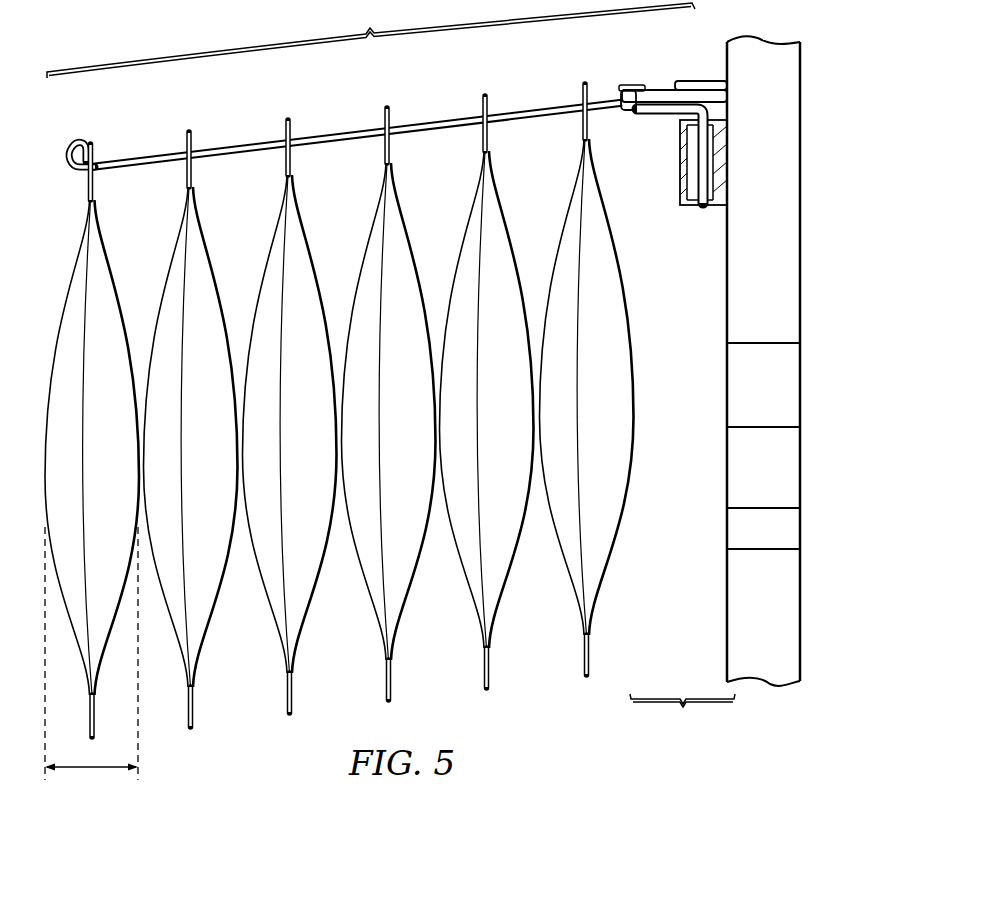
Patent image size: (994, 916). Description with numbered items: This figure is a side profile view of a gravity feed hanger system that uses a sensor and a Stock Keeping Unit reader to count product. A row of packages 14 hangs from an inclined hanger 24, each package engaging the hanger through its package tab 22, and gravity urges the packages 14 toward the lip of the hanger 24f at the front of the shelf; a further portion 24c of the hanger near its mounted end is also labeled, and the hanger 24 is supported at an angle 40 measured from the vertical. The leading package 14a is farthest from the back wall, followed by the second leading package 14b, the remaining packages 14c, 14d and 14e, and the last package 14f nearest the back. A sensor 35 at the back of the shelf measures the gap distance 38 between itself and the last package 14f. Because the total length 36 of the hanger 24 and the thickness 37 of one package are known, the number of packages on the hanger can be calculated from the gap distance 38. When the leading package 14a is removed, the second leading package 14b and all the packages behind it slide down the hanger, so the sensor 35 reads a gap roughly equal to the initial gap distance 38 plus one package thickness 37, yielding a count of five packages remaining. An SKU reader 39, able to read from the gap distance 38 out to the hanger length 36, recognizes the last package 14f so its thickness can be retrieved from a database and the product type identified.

The package 14 is at (202, 457).
The leading package 14a is at (91, 465).
The second leading package 14b is at (191, 452).
The remaining package 14c is at (290, 441).
The remaining package 14d is at (388, 429).
The remaining package 14e is at (486, 416).
The last package 14f is at (587, 404).
The package tab 22 is at (192, 137).
The hanger 24 is at (335, 128).
The rod end segment 24c is at (433, 120).
The lip of the hanger 24f is at (79, 136).
The sensor 35 is at (800, 386).
The total length of the hanger 36 is at (371, 39).
The thickness of one package 37 is at (90, 769).
The gap distance 38 is at (682, 715).
The SKU reader 39 is at (800, 530).
The angle 40 is at (690, 178).